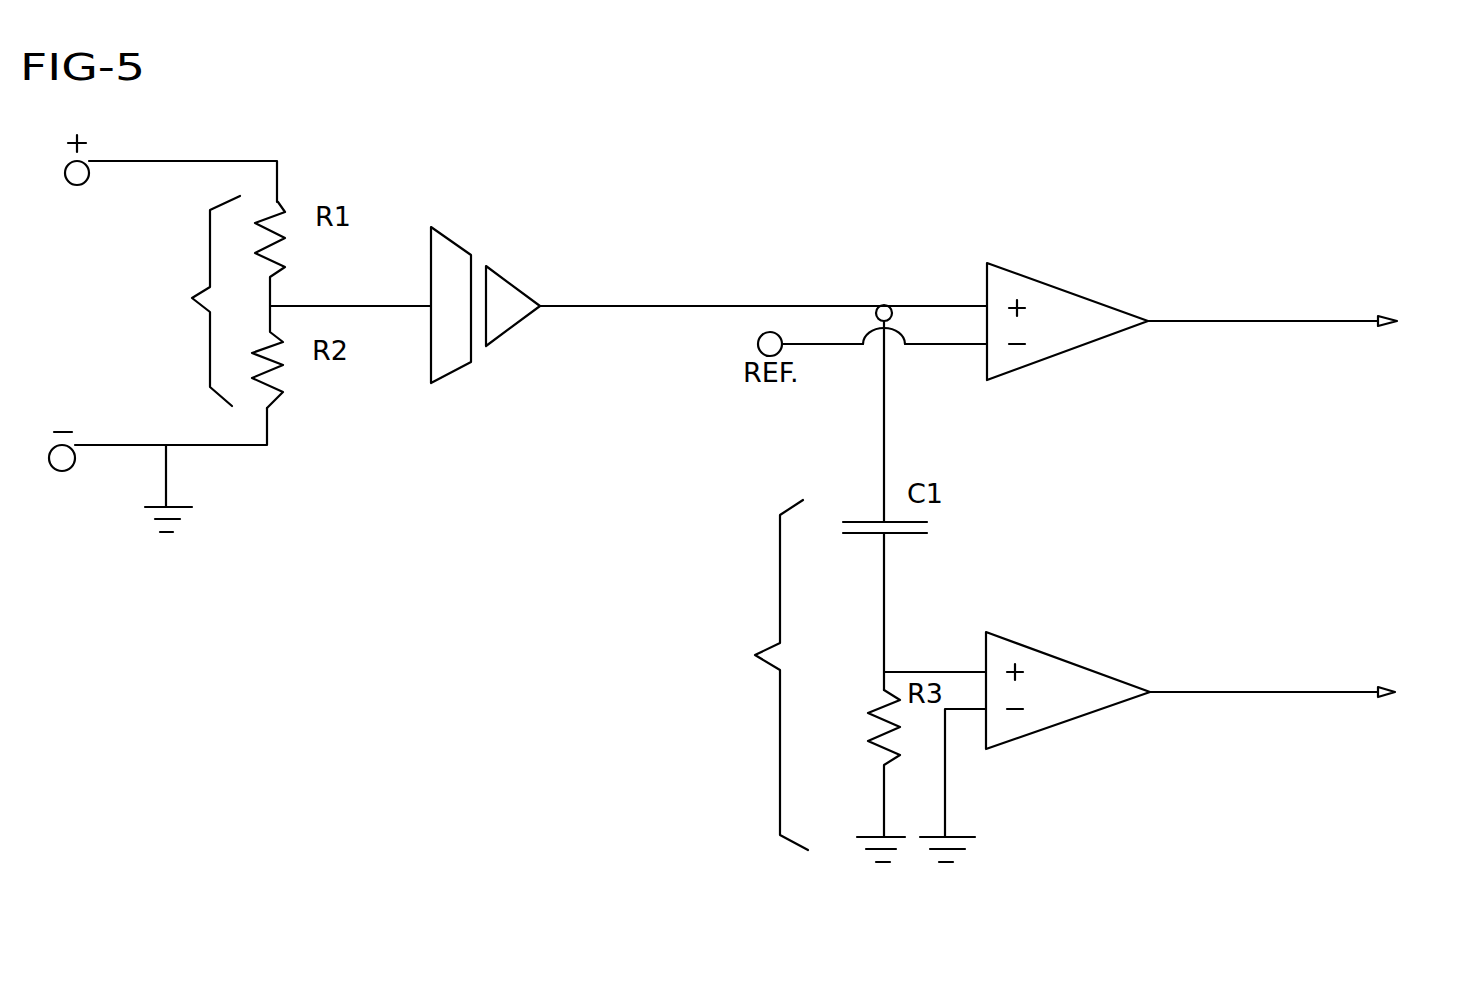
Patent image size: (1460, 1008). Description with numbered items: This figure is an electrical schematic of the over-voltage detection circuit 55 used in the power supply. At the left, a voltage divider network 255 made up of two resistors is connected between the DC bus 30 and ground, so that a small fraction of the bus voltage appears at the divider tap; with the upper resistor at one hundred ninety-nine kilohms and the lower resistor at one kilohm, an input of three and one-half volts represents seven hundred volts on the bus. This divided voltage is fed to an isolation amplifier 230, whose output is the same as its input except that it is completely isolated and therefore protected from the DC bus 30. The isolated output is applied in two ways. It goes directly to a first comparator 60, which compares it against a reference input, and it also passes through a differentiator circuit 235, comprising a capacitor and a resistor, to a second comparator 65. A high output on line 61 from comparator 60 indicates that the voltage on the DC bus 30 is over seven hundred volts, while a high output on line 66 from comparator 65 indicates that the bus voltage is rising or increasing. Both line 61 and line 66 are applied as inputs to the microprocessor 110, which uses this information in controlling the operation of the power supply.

The DC bus 30 is at (118, 161).
The voltage divider network 255 is at (192, 298).
The isolation amplifier 230 is at (453, 240).
The comparator 60 is at (1058, 287).
The line 61 is at (1250, 321).
The comparator 65 is at (1060, 653).
The line 66 is at (1273, 692).
The differentiator circuit 235 is at (755, 655).
The microprocessor 110 is at (1290, 513).
The over-voltage detection circuit 55 is at (393, 587).